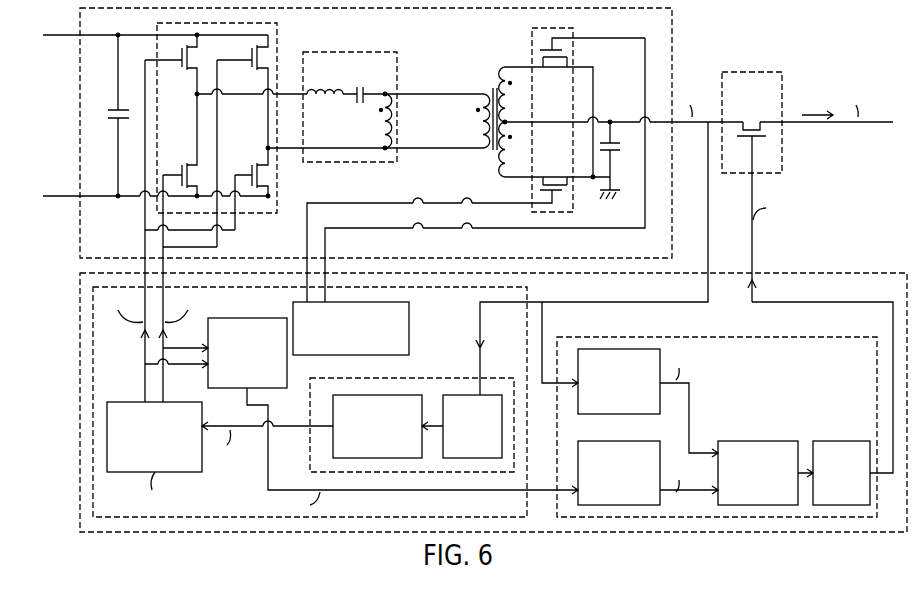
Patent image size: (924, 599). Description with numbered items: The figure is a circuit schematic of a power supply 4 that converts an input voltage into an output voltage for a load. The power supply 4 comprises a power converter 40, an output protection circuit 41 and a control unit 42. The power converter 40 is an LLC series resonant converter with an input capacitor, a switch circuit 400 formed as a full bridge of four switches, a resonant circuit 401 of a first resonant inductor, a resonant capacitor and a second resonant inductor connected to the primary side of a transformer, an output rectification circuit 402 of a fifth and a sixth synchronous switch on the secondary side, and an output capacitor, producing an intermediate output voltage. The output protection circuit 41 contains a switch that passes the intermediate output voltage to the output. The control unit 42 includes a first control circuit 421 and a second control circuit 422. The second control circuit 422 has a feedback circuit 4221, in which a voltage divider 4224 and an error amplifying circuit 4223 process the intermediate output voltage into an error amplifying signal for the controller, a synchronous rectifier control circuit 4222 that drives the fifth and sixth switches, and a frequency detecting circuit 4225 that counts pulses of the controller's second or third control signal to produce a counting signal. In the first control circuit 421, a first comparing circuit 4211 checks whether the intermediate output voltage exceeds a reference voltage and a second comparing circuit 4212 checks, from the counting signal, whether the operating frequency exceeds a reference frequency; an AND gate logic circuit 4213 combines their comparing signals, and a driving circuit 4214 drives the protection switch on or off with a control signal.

The power supply 4 is at (903, 48).
The power converter 40 is at (673, 38).
The switch circuit 400 is at (278, 38).
The resonant circuit 401 is at (350, 52).
The output rectification circuit 402 is at (532, 38).
The output protection circuit 41 is at (752, 72).
The control unit 42 is at (80, 303).
The first control circuit 421 is at (643, 337).
The first comparing circuit 4211 is at (638, 414).
The second comparing circuit 4212 is at (623, 441).
The AND gate logic circuit 4213 is at (760, 441).
The driving circuit 4214 is at (845, 441).
The second control circuit 422 is at (93, 375).
The feedback circuit 4221 is at (310, 465).
The synchronous rectifier control circuit 4222 is at (433, 316).
The error amplifying circuit 4223 is at (373, 395).
The voltage divider 4224 is at (462, 395).
The frequency detecting circuit 4225 is at (245, 318).